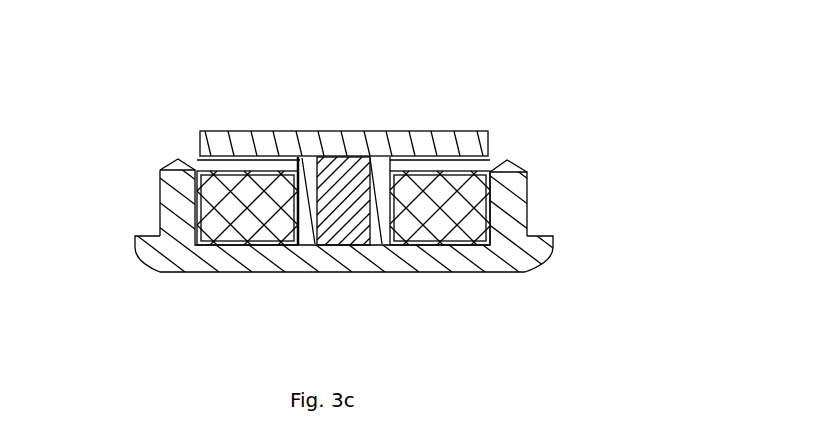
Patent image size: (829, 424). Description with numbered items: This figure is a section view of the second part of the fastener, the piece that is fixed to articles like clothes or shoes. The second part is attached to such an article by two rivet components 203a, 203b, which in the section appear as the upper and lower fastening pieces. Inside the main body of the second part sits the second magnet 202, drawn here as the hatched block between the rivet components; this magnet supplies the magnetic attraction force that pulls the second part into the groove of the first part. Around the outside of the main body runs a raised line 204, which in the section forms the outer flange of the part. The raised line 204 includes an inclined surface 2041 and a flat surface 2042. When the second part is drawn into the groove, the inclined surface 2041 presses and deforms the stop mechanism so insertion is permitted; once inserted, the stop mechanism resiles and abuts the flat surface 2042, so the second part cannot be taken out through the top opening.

The second magnet 202 is at (250, 213).
The rivet component 203a is at (445, 122).
The rivet component 203b is at (347, 262).
The raised line 204 is at (152, 268).
The inclined surface 2041 is at (535, 255).
The flat surface 2042 is at (548, 236).